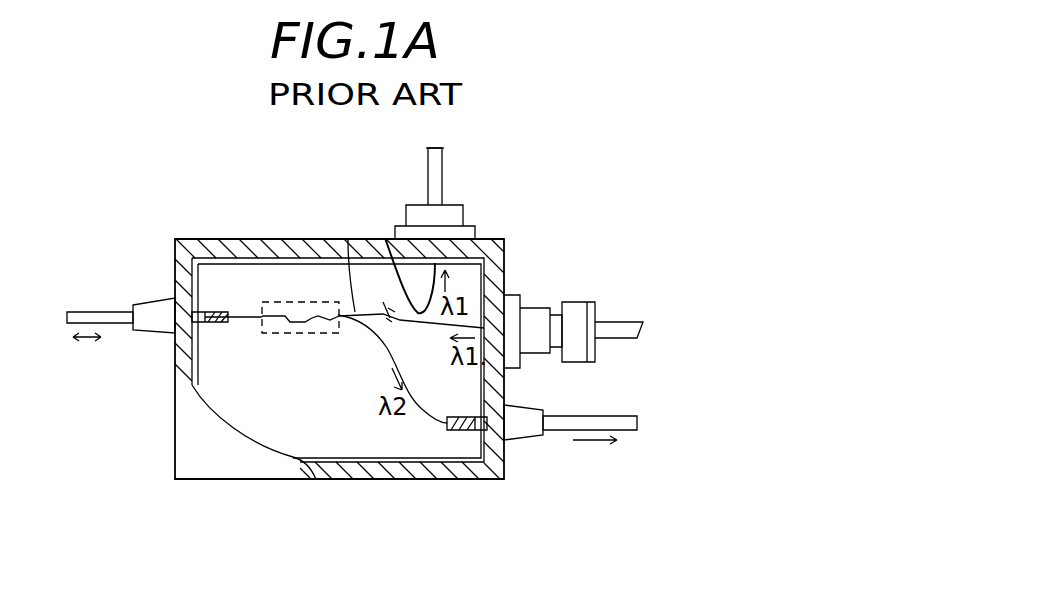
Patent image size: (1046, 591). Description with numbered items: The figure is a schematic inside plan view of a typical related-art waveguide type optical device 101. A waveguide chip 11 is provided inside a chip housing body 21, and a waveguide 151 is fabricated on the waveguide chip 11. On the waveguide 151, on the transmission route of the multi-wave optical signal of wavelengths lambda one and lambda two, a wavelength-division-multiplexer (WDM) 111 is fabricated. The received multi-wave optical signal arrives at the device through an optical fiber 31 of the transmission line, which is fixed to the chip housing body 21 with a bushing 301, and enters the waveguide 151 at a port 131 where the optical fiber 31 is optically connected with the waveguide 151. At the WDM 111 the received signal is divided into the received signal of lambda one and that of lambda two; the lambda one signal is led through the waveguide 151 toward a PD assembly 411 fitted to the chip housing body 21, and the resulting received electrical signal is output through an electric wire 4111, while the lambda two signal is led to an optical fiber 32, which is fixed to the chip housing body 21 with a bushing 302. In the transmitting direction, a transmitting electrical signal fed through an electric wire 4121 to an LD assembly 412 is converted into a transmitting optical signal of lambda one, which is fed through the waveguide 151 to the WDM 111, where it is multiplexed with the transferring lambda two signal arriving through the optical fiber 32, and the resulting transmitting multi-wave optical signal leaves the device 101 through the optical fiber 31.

The waveguide type optical device 101 is at (590, 151).
The waveguide chip 11 is at (297, 278).
The wavelength-division-multiplexer (WDM) 111 is at (283, 334).
The port 131 is at (217, 312).
The waveguide 151 is at (385, 238).
The chip housing body 21 is at (246, 240).
The bushing 301 is at (152, 304).
The bushing 302 is at (523, 442).
The optical fiber 31 is at (83, 312).
The optical fiber 32 is at (615, 412).
The PD assembly 411 is at (455, 206).
The electric wire 4111 is at (437, 167).
The LD assembly 412 is at (577, 305).
The electric wire 4121 is at (620, 330).